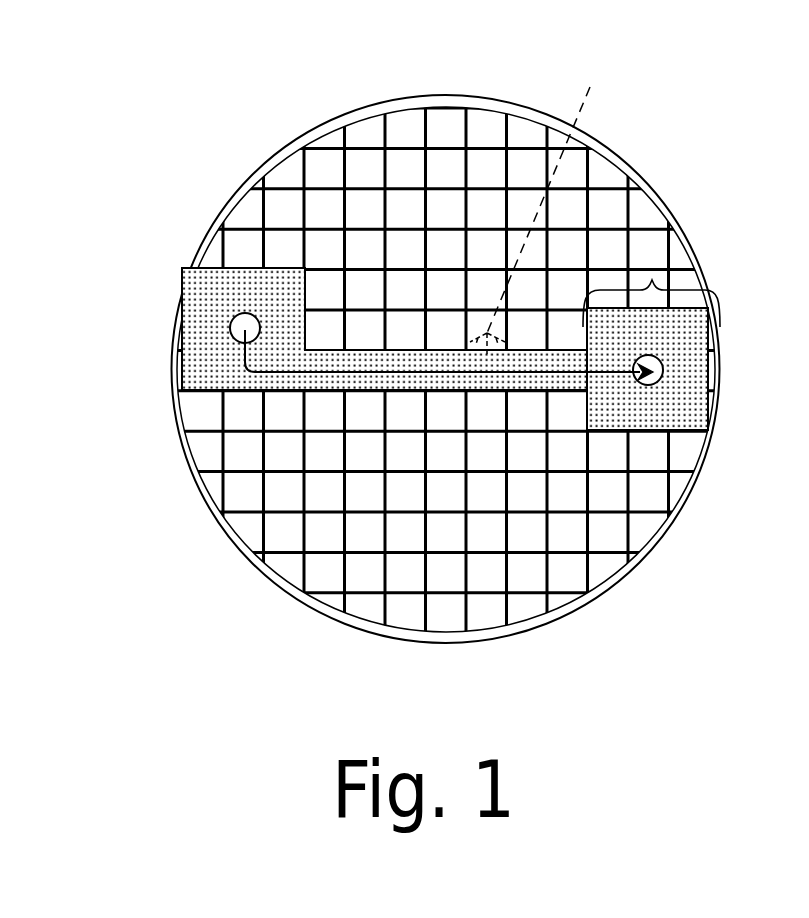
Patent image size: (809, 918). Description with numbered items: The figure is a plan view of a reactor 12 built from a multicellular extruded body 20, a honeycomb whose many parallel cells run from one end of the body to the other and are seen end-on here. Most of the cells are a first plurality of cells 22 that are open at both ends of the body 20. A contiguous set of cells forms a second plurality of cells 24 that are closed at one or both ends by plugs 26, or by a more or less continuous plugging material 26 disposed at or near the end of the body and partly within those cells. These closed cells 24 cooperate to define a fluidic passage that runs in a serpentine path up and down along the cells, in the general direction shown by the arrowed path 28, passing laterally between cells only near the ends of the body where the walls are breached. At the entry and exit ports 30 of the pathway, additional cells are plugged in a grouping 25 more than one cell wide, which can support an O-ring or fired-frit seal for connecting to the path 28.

The reactor 12 is at (445, 384).
The multicellular extruded body 20 is at (325, 617).
The first plurality of cells 22 is at (448, 573).
The second plurality of cells 24 is at (547, 208).
The grouping of plugged cells 25 is at (652, 280).
The plugs 26 is at (215, 308).
The arrowed path 28 is at (608, 372).
The entry and exit ports 30 is at (238, 325).